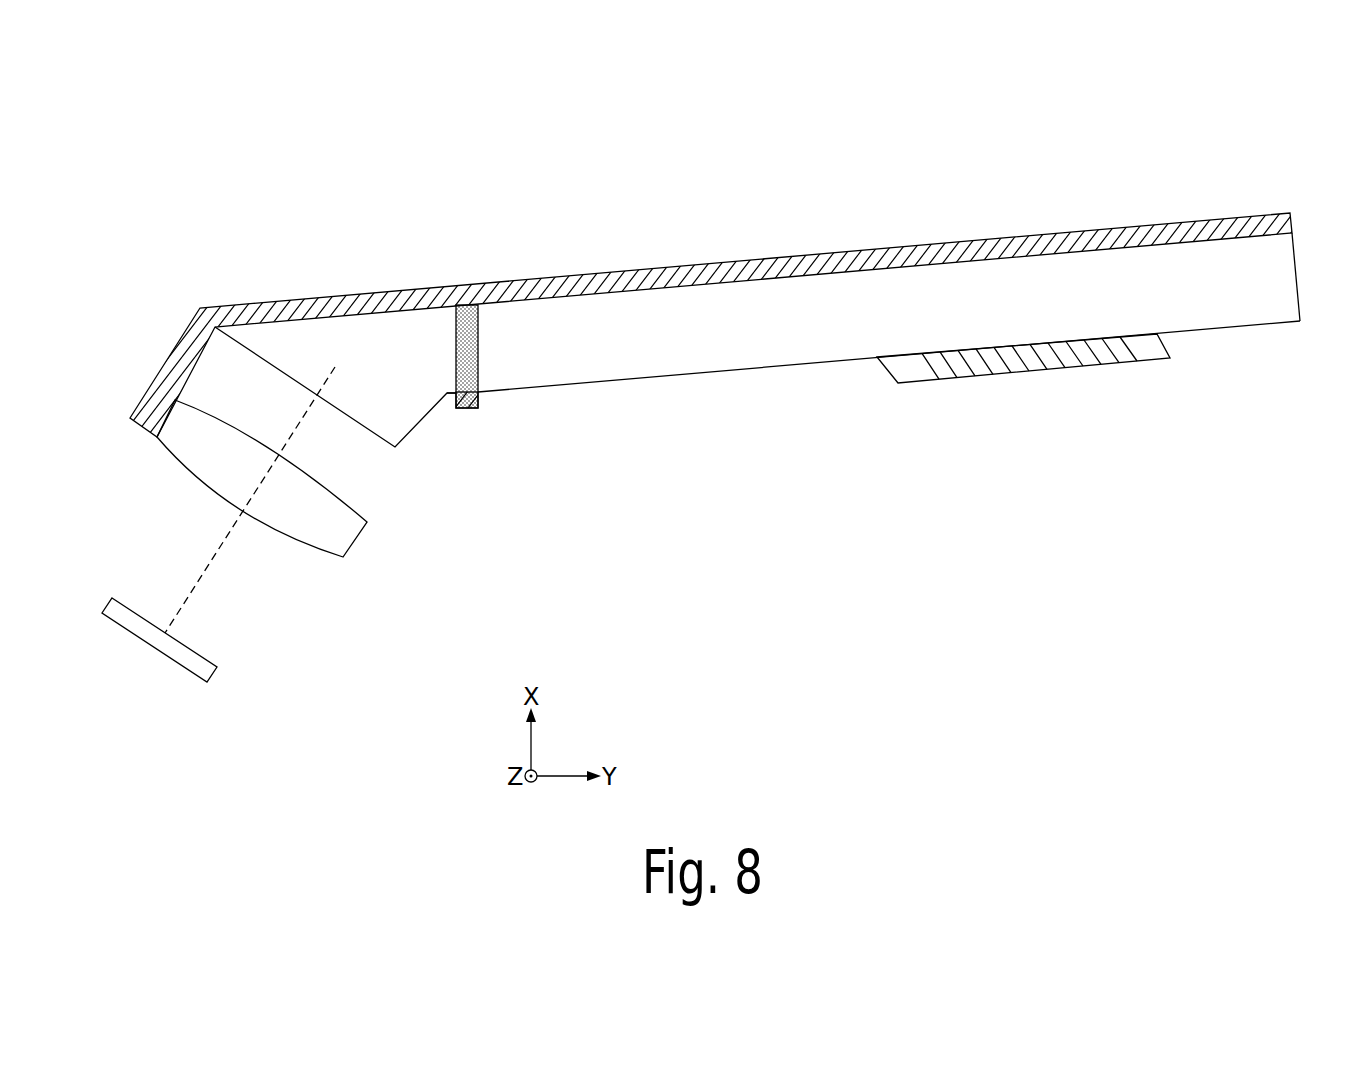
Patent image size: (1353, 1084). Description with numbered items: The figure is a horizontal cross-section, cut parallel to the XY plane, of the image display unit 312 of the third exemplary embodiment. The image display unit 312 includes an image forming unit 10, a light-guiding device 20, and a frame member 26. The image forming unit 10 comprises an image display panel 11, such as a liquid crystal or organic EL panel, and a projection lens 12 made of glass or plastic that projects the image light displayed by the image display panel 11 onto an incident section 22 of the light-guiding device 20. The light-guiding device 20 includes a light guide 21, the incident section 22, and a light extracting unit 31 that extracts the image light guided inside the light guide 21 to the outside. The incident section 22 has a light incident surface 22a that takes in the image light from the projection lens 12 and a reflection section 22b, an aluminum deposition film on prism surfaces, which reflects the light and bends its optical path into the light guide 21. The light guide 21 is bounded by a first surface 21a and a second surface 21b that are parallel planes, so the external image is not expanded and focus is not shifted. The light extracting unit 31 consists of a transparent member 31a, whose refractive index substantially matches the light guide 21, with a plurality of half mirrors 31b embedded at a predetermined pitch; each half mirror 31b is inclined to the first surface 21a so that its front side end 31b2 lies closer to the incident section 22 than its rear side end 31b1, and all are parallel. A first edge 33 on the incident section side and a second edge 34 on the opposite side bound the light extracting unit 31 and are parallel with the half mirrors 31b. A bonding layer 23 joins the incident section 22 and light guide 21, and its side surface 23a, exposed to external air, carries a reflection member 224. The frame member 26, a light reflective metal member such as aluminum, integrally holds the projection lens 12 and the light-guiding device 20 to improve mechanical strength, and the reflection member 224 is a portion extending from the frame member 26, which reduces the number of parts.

The image display unit 312 is at (548, 190).
The light-guiding device 20 is at (772, 590).
The light guide 21 is at (698, 386).
The first surface 21a is at (1137, 352).
The second surface 21b is at (918, 250).
The incident section 22 is at (417, 443).
The light incident surface 22a is at (235, 332).
The reflection section 22b is at (263, 313).
The bonding layer 23 is at (473, 350).
The side surface 23a is at (468, 305).
The frame member 26 is at (610, 286).
The reflection member 224 is at (455, 283).
The light extracting unit 31 is at (916, 394).
The transparent member 31a is at (1028, 354).
The half mirror 31b is at (1049, 356).
The rear side end 31b1 is at (1160, 362).
The front side end 31b2 is at (1107, 343).
The first edge 33 is at (882, 373).
The second edge 34 is at (1172, 352).
The image forming unit 10 is at (420, 613).
The image display panel 11 is at (213, 673).
The projection lens 12 is at (348, 543).